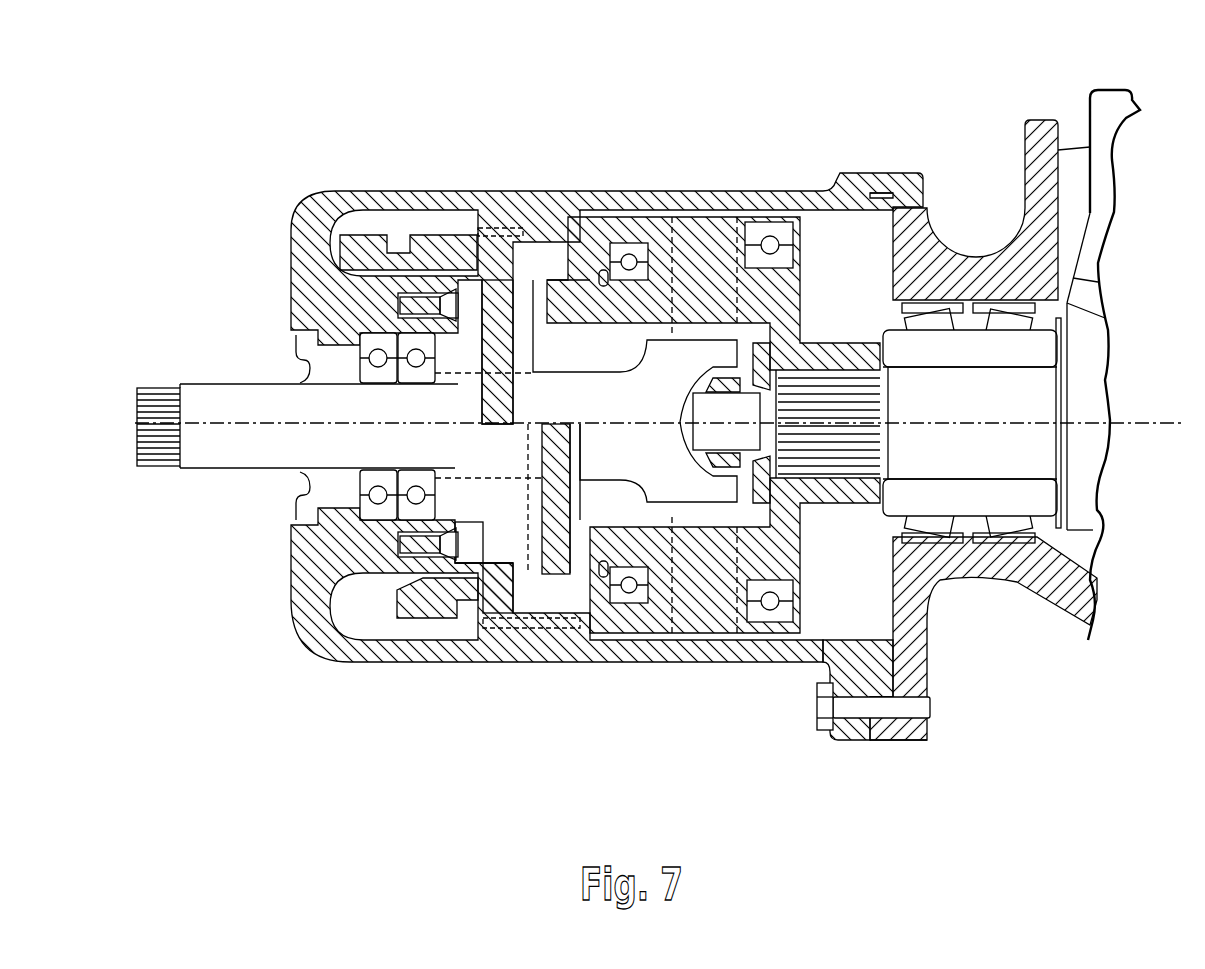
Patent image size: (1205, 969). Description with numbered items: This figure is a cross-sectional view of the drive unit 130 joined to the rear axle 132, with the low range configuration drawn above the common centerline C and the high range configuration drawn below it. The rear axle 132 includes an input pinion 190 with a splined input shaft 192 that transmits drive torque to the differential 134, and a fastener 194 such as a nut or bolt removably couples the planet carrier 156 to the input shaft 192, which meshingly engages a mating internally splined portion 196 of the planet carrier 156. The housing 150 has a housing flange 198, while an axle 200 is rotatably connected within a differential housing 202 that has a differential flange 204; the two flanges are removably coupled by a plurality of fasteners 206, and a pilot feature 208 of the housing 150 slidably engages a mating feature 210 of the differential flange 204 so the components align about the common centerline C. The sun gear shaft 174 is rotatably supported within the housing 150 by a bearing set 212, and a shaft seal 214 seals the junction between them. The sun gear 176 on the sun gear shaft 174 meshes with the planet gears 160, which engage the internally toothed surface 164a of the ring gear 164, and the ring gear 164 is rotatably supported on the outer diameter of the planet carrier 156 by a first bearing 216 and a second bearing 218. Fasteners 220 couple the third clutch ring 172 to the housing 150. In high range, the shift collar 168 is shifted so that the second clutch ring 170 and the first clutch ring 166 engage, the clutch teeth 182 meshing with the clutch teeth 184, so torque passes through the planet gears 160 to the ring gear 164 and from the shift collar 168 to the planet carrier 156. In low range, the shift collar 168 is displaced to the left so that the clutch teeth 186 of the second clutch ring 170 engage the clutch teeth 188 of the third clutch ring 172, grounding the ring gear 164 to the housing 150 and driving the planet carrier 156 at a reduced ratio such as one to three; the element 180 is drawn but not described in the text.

The drive unit 130 is at (512, 742).
The rear axle 132 is at (923, 613).
The differential 134 is at (1090, 383).
The housing 150 is at (732, 657).
The planet carrier 156 is at (833, 283).
The planet gears 160 is at (717, 265).
The ring gear 164 is at (625, 582).
The internally toothed surface 164a is at (507, 240).
The first clutch ring 166 is at (583, 290).
The shift collar 168 is at (368, 230).
The second clutch ring 170 is at (492, 293).
The third clutch ring 172 is at (466, 597).
The sun gear shaft 174 is at (545, 385).
The sun gear 176 is at (717, 343).
The groove 180 is at (402, 240).
The clutch teeth 182 is at (590, 590).
The clutch teeth 184 is at (557, 283).
The clutch teeth 186 is at (467, 295).
The clutch teeth 188 is at (495, 590).
The input pinion 190 is at (975, 518).
The splined input shaft 192 is at (917, 545).
The fastener 194 is at (917, 460).
The internally splined portion 196 is at (937, 237).
The housing flange 198 is at (847, 730).
The axle 200 is at (1115, 118).
The differential housing 202 is at (1083, 595).
The differential flange 204 is at (903, 730).
The fasteners 206 is at (818, 730).
The pilot feature 208 is at (890, 202).
The mating feature 210 is at (851, 372).
The bearing set 212 is at (417, 380).
The shaft seal 214 is at (290, 508).
The first bearing 216 is at (627, 260).
The second bearing 218 is at (772, 244).
The fasteners 220 is at (398, 548).
The common centerline C is at (1090, 425).